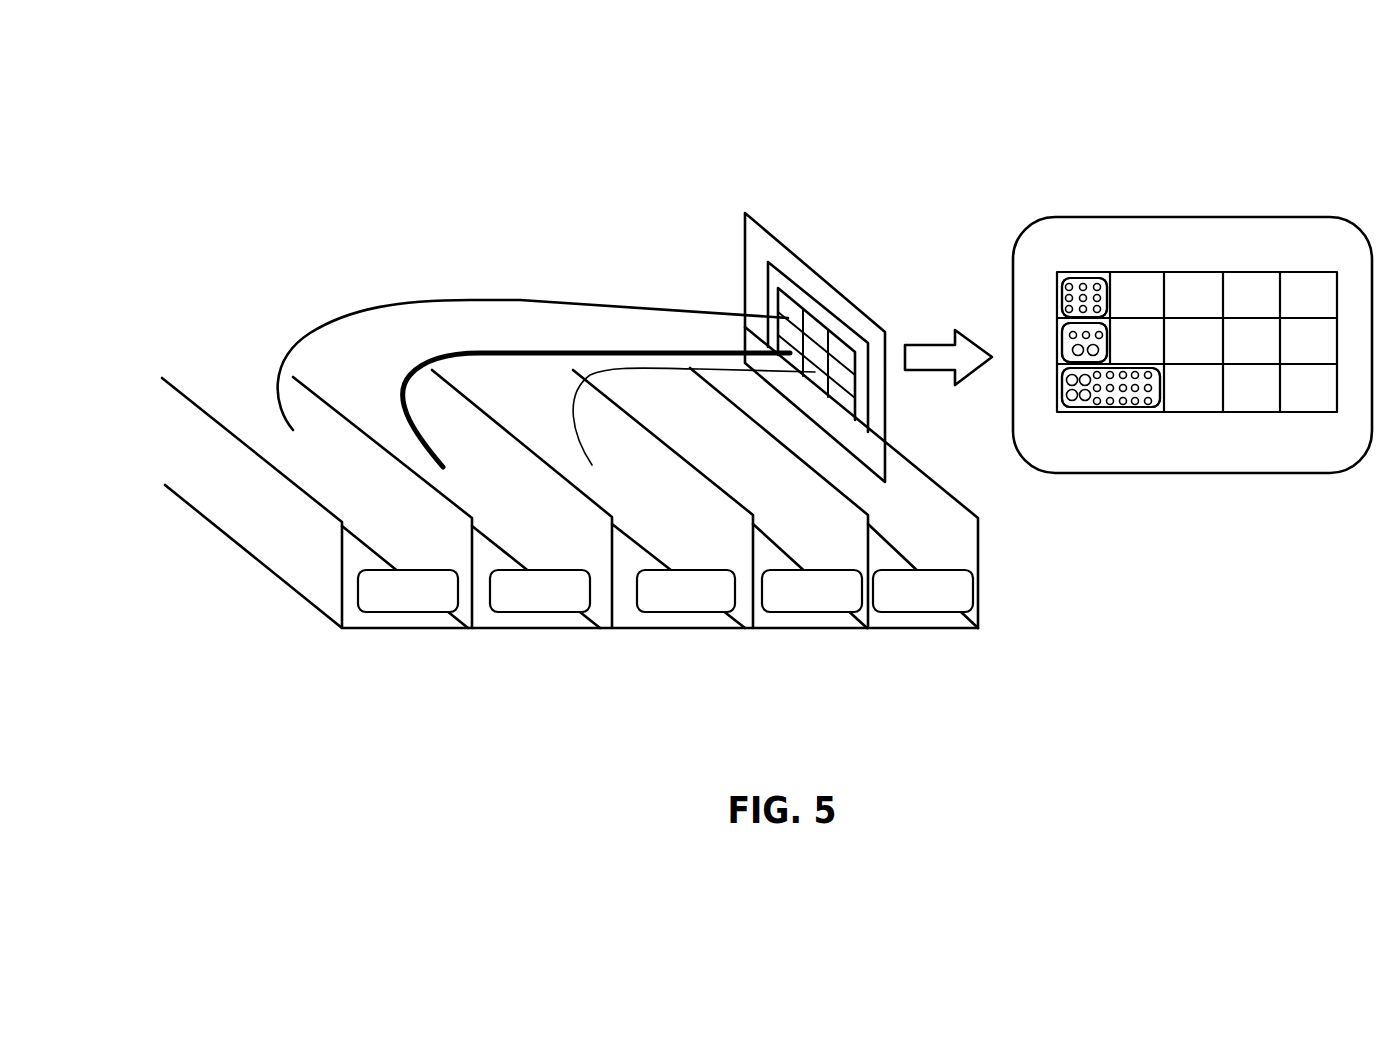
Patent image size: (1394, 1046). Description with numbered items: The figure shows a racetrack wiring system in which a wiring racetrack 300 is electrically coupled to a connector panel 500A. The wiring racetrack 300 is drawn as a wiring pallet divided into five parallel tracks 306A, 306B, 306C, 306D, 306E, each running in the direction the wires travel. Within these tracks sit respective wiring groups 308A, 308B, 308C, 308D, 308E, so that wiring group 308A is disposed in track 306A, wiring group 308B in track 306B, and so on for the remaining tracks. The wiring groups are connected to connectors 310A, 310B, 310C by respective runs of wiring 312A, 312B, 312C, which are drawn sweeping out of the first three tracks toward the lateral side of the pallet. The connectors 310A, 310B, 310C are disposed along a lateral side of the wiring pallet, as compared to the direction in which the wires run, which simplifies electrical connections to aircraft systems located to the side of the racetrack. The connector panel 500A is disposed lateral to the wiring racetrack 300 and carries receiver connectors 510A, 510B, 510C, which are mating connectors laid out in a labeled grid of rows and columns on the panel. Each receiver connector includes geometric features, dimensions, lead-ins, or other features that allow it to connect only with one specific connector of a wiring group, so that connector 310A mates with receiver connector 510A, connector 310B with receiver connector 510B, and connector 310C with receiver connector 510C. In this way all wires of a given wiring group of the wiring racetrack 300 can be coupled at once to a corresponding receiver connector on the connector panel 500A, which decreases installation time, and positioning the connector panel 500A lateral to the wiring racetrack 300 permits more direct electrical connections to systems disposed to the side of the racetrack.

The wiring racetrack 300 is at (420, 138).
The track 306A is at (407, 630).
The track 306B is at (558, 630).
The track 306C is at (705, 630).
The track 306D is at (837, 630).
The track 306E is at (962, 630).
The wiring group 308A is at (368, 613).
The wiring group 308B is at (517, 613).
The wiring group 308C is at (667, 613).
The wiring group 308D is at (797, 613).
The wiring group 308E is at (918, 613).
The connector 310A is at (1072, 275).
The connector 310B is at (1062, 352).
The connector 310C is at (1087, 407).
The wiring 312A is at (326, 327).
The wiring 312B is at (443, 353).
The wiring 312C is at (568, 395).
The connector panel 500A is at (1252, 176).
The receiver connector 510A is at (1060, 287).
The receiver connector 510B is at (1108, 337).
The receiver connector 510C is at (1163, 382).